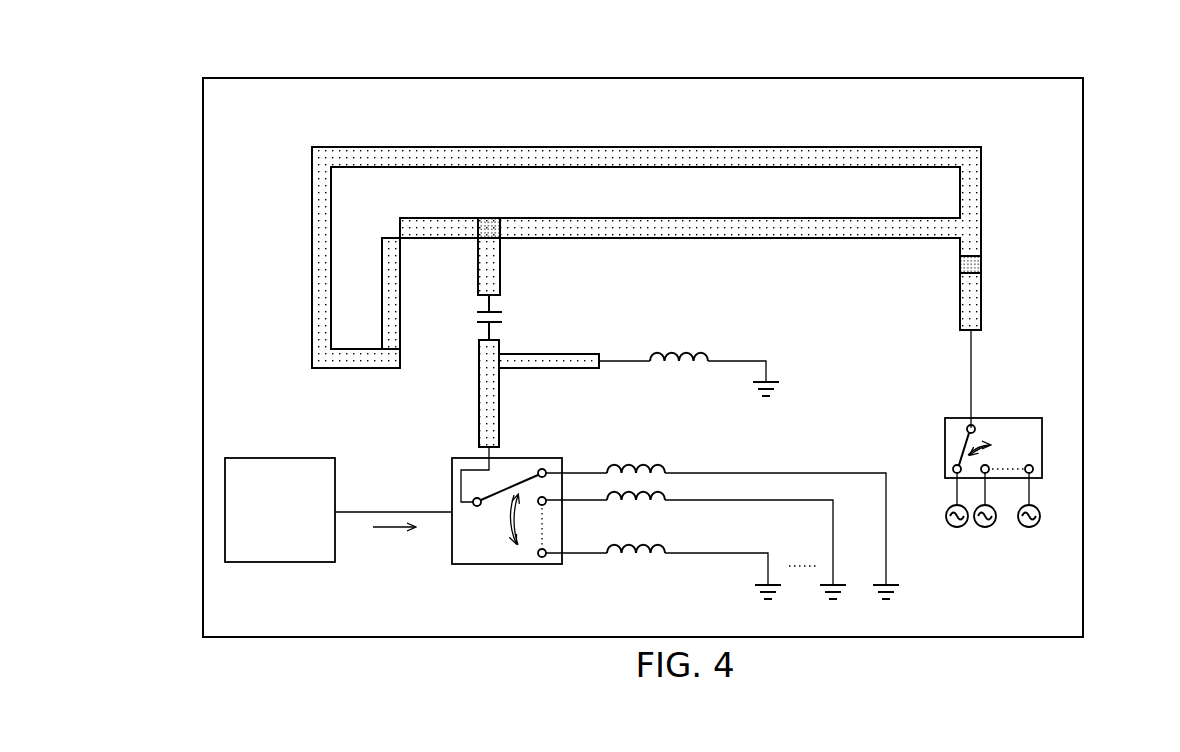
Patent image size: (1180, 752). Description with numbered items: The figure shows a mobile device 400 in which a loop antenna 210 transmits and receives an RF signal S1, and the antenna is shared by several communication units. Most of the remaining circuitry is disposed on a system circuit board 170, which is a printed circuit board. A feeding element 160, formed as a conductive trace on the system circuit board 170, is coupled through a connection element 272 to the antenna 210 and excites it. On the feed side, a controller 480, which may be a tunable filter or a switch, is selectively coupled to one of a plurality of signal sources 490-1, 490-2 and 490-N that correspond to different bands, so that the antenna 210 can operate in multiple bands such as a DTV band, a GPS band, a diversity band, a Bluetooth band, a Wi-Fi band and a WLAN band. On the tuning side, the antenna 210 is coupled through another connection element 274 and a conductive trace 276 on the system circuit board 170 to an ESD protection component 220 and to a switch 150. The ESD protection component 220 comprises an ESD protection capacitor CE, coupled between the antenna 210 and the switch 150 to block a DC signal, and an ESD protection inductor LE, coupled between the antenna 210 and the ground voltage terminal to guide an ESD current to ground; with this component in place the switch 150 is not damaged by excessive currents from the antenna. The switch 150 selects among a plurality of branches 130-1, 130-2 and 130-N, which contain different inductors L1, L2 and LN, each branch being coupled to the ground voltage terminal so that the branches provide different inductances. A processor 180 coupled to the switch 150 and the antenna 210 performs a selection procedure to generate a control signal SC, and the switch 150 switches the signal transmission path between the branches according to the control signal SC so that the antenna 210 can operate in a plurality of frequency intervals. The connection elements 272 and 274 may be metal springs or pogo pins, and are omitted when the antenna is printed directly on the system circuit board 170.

The mobile device 400 is at (249, 67).
The system circuit board 170 is at (1083, 207).
The RF signal S1 is at (447, 145).
The antenna 210 is at (683, 147).
The connection element 274 is at (489, 218).
The conductive trace 276 is at (479, 267).
The ESD protection capacitor CE is at (505, 316).
The ESD protection inductor LE is at (677, 353).
The connection element 272 is at (981, 264).
The feeding element 160 is at (981, 303).
The controller 480 is at (1005, 418).
The signal source 490-1 is at (957, 527).
The signal source 490-2 is at (985, 527).
The signal source 490-N is at (1029, 527).
The processor 180 is at (278, 562).
The control signal SC is at (398, 532).
The switch 150 is at (505, 564).
The inductor L1 is at (634, 464).
The inductor L2 is at (635, 512).
The inductor LN is at (633, 565).
The branch 130-1 is at (702, 471).
The branch 130-2 is at (743, 500).
The branch 130-N is at (697, 555).
The ESD protection component 220 is at (1148, 75).